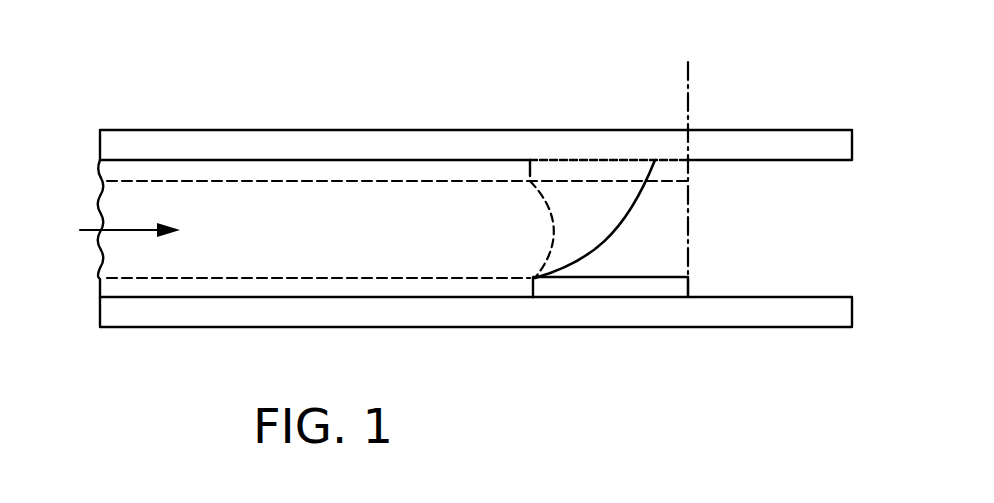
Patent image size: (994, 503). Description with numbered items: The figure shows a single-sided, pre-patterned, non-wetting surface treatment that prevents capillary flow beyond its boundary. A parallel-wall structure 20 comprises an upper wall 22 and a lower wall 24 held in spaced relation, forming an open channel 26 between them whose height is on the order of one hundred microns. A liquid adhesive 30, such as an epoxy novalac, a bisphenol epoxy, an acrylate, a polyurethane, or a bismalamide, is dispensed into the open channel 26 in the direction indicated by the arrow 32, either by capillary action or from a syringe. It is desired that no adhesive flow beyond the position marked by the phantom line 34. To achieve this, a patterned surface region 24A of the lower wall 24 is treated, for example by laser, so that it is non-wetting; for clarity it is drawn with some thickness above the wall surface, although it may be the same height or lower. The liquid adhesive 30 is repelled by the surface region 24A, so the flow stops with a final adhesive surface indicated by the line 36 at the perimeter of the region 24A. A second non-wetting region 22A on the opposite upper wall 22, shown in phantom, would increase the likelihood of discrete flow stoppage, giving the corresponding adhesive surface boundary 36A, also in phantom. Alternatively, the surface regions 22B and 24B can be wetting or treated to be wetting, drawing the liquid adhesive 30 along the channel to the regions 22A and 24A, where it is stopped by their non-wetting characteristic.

The parallel-wall structure 20 is at (152, 108).
The upper wall 22 is at (205, 130).
The second non-wetting region 22A is at (664, 178).
The surface region 22B is at (338, 172).
The lower wall 24 is at (178, 330).
The patterned surface region 24A is at (592, 300).
The surface region 24B is at (290, 291).
The open channel 26 is at (793, 271).
The liquid adhesive 30 is at (310, 217).
The arrow 32 is at (136, 232).
The phantom line 34 is at (690, 70).
The final adhesive surface 36 is at (612, 210).
The adhesive surface boundary 36A is at (553, 224).